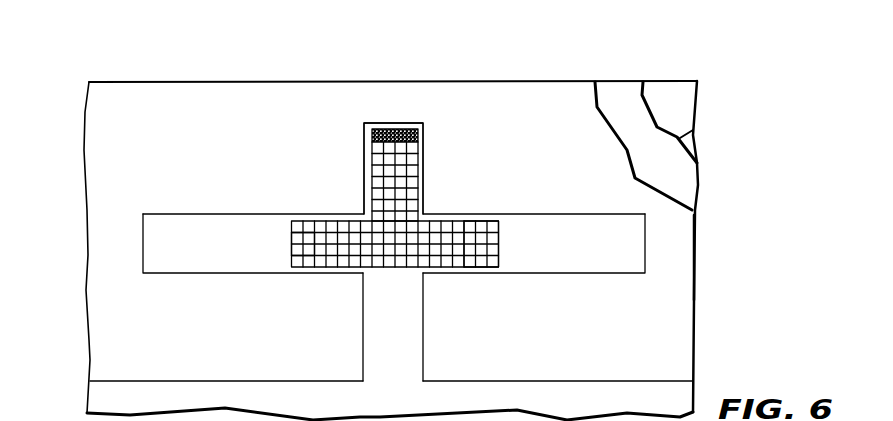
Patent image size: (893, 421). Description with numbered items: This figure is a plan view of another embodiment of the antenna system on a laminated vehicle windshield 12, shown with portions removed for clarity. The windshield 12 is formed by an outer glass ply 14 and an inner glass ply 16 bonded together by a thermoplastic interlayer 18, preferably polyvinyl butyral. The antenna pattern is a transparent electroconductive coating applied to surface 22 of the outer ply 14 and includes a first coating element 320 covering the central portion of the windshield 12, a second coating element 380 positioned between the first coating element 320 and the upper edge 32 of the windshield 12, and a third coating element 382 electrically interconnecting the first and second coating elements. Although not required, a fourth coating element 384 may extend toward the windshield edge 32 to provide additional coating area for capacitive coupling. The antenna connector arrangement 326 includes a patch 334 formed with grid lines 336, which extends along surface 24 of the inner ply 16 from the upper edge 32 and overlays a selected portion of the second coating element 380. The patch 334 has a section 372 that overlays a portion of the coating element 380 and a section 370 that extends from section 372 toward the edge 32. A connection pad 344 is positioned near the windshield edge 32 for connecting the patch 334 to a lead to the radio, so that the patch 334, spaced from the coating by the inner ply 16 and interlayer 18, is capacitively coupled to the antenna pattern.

The windshield 12 is at (85, 112).
The outer glass ply 14 is at (695, 107).
The inner glass ply 16 is at (662, 191).
The thermoplastic interlayer 18 is at (692, 127).
The surface of outer ply 22 is at (668, 108).
The surface of inner ply 24 is at (672, 248).
The upper edge 32 is at (248, 81).
The first coating element 320 is at (113, 380).
The antenna connector arrangement 326 is at (462, 98).
The patch 334 is at (497, 252).
The grid lines 336 is at (300, 255).
The connection pad 344 is at (388, 130).
The section of patch 370 is at (372, 160).
The section of patch 372 is at (330, 221).
The second coating element 380 is at (553, 213).
The third coating element 382 is at (424, 355).
The fourth coating element 384 is at (364, 177).